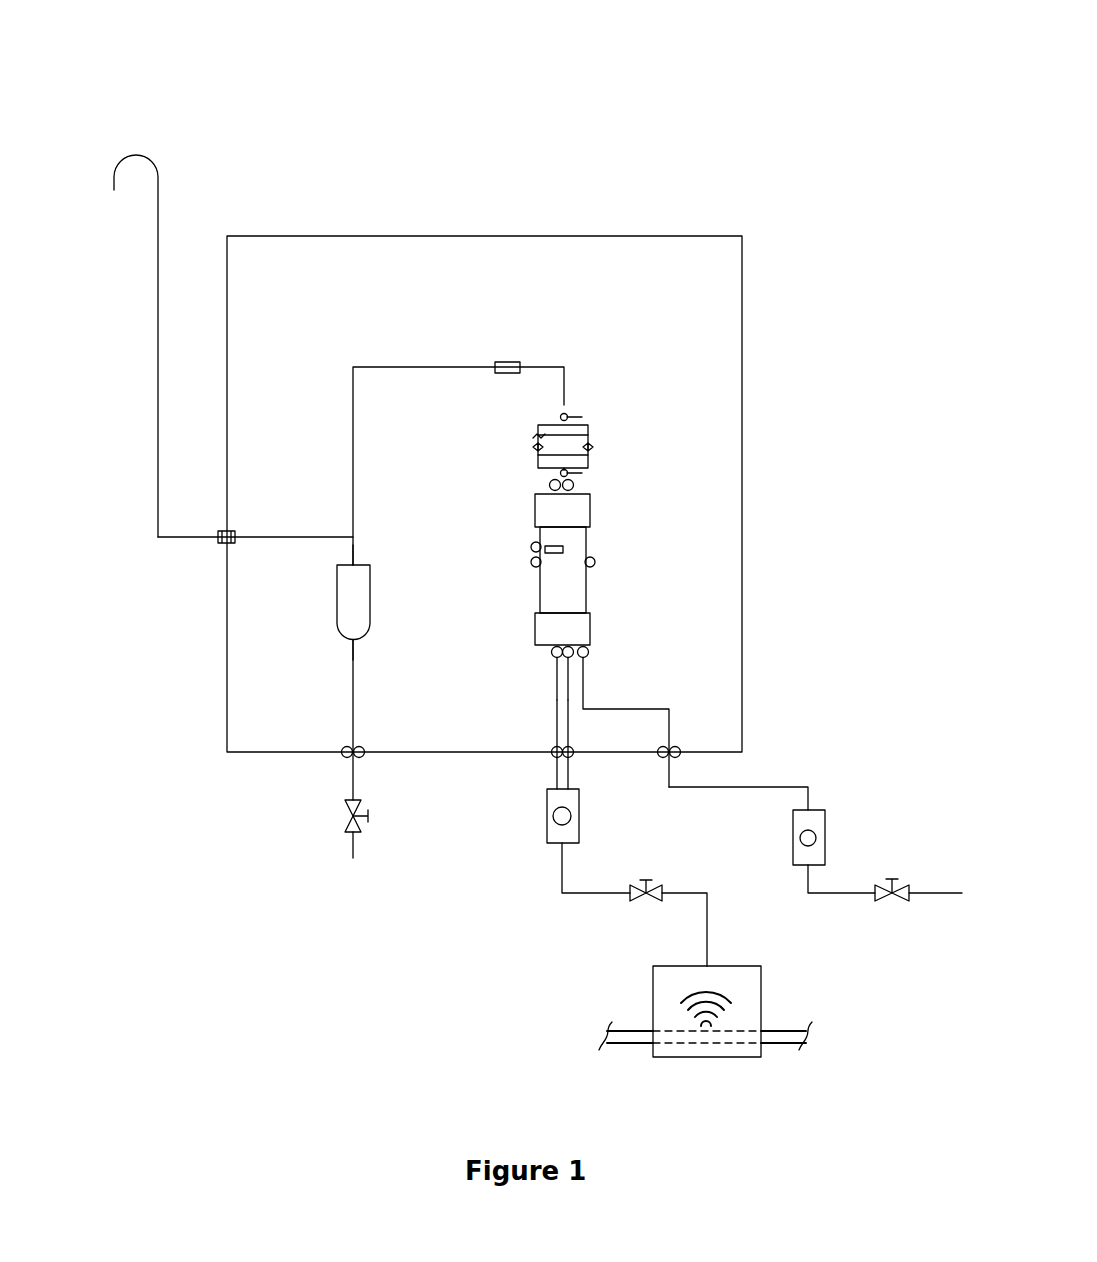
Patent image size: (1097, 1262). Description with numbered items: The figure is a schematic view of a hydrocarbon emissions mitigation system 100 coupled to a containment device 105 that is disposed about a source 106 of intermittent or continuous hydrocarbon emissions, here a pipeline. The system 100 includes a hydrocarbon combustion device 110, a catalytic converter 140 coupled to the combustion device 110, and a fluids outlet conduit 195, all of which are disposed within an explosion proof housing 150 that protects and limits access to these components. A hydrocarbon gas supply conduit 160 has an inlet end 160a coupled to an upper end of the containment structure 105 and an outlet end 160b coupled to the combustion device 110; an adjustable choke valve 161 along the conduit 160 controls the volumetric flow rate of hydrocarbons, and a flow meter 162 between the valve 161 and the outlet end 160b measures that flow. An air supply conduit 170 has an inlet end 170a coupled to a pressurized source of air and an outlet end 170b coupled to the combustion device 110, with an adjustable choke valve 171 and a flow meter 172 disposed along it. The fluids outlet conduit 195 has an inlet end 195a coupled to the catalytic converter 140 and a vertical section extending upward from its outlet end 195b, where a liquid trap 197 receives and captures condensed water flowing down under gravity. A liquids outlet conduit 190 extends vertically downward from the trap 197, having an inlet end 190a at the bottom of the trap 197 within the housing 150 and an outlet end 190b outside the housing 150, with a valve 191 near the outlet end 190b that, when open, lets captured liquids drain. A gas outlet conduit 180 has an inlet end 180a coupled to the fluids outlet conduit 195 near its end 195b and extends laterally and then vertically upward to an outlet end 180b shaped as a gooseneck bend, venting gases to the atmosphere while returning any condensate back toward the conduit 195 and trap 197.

The hydrocarbon emissions mitigation system 100 is at (744, 113).
The containment device 105 is at (653, 1012).
The source 106 is at (743, 1016).
The hydrocarbon combustion device 110 is at (578, 545).
The catalytic converter 140 is at (580, 440).
The housing 150 is at (743, 323).
The hydrocarbon gas supply conduit 160 is at (560, 870).
The inlet end 160a is at (708, 957).
The outlet end 160b is at (556, 666).
The adjustable choke valve 161 is at (641, 898).
The flow meter 162 is at (575, 831).
The air supply conduit 170 is at (790, 786).
The inlet end 170a is at (946, 896).
The outlet end 170b is at (585, 665).
The adjustable choke valve 171 is at (881, 898).
The flow meter 172 is at (826, 833).
The gas outlet conduit 180 is at (187, 538).
The inlet end 180a is at (347, 536).
The outlet end 180b is at (122, 162).
The liquids outlet conduit 190 is at (352, 683).
The inlet end 190a is at (355, 643).
The outlet end 190b is at (350, 846).
The valve 191 is at (350, 815).
The fluids outlet conduit 195 is at (390, 366).
The inlet end 195a is at (566, 406).
The outlet end 195b is at (355, 551).
The liquid trap 197 is at (346, 585).